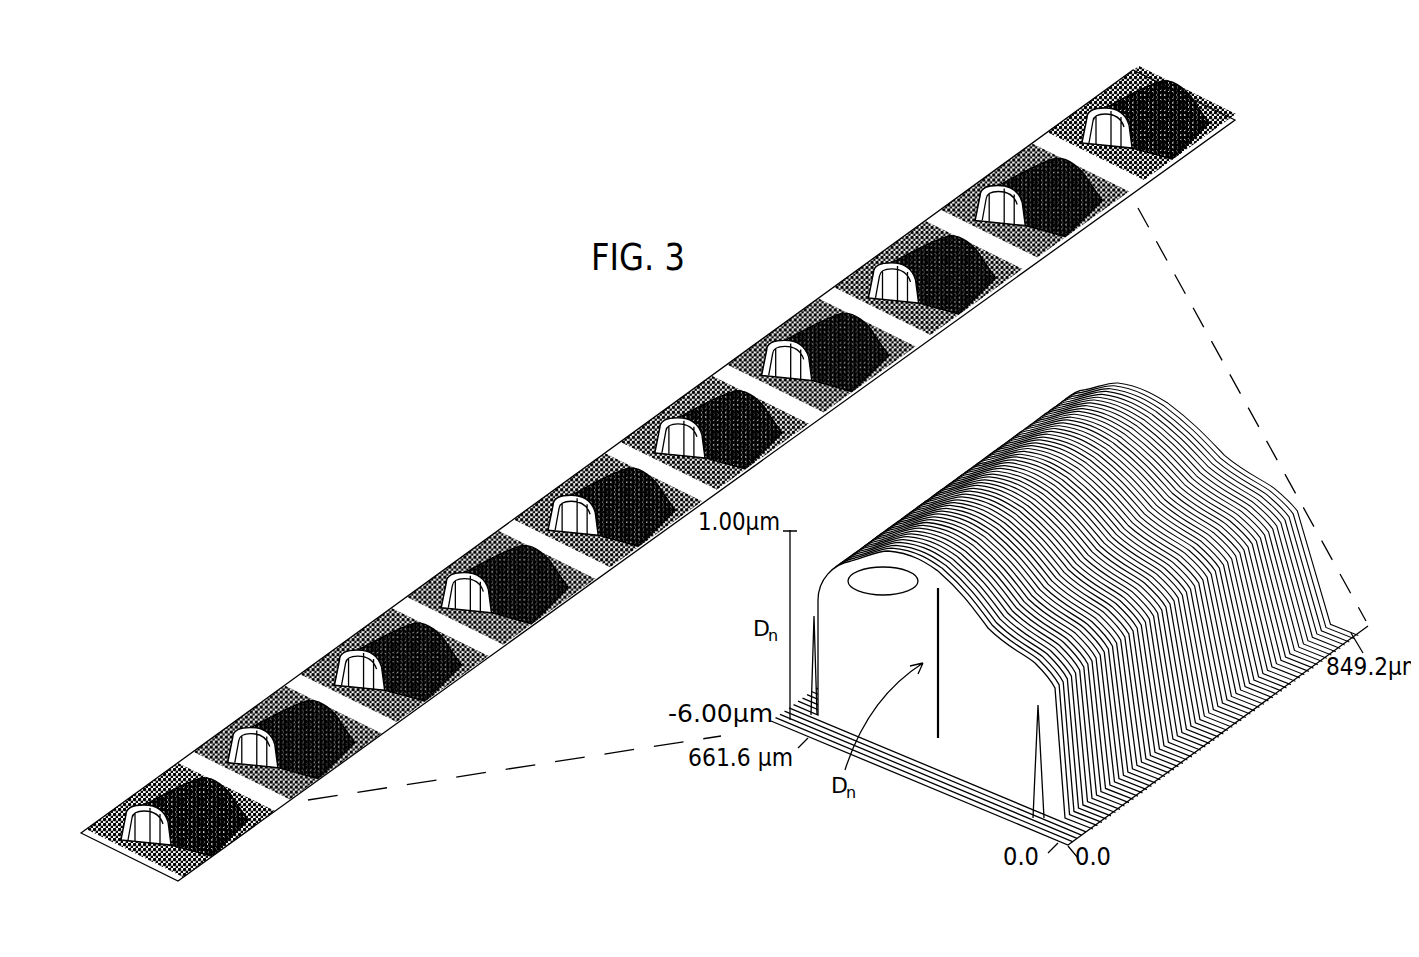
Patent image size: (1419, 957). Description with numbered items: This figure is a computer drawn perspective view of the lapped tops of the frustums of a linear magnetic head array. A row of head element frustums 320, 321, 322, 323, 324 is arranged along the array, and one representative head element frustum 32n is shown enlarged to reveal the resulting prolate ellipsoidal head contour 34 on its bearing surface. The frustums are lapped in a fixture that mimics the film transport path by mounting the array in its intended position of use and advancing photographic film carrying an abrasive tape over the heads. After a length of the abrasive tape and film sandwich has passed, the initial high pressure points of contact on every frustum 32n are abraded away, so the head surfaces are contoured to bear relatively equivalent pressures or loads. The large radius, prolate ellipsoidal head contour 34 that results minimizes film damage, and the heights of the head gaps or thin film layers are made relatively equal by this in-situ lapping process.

The head element frustum 320 is at (143, 780).
The head element frustum 321 is at (1097, 83).
The head element frustum 322 is at (366, 612).
The head element frustum 323 is at (458, 545).
The head element frustum 324 is at (577, 455).
The head element frustum 32n is at (1271, 735).
The prolate ellipsoidal head contour 34 is at (838, 560).